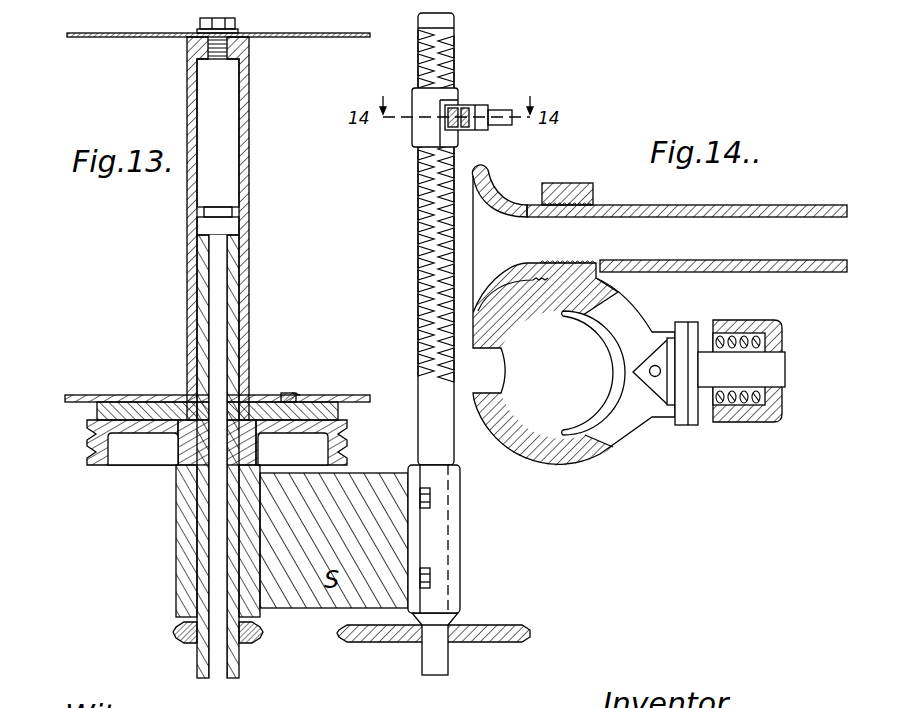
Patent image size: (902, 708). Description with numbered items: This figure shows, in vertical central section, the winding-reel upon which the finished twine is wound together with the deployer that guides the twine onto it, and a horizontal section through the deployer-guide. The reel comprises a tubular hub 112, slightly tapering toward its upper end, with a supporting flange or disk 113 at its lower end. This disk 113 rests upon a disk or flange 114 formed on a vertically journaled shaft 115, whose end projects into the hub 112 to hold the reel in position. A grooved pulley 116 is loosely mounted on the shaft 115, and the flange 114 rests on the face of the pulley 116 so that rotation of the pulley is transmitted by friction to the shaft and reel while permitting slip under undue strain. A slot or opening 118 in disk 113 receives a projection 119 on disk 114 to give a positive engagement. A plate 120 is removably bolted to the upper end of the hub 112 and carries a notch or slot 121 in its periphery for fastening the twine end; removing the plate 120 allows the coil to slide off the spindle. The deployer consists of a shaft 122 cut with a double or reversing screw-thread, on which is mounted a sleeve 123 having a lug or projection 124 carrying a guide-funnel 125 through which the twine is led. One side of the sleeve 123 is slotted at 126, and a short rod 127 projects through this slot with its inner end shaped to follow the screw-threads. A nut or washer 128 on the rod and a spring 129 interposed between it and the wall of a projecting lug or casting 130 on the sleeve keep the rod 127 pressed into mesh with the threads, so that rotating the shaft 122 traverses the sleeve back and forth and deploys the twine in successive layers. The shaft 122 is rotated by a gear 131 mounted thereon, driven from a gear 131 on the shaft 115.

In FIG. 13, the tubular hub 112 is at (249, 238).
In FIG. 13, the supporting flange or disk 113 is at (323, 394).
In FIG. 13, the disk or flange 114 is at (338, 407).
In FIG. 13, the shaft 115 is at (236, 348).
In FIG. 13, the grooved pulley 116 is at (102, 467).
In FIG. 13, the slot or opening 118 is at (287, 393).
In FIG. 13, the projection 119 is at (292, 393).
In FIG. 13, the plate 120 is at (290, 33).
In FIG. 13, the notch or slot 121 is at (225, 16).
In FIG. 13, the shaft 122 is at (428, 424).
In FIG. 13, the sleeve 123 is at (418, 135).
In FIG. 14, the sleeve 123 is at (542, 463).
In FIG. 14, the lug or projection 124 is at (572, 190).
In FIG. 14, the guide-funnel 125 is at (650, 208).
In FIG. 14, the slot 126 is at (638, 318).
In FIG. 14, the short rod 127 is at (777, 367).
In FIG. 14, the nut or washer 128 is at (690, 428).
In FIG. 14, the spring 129 is at (753, 405).
In FIG. 14, the projecting lug or casting 130 is at (777, 423).
In FIG. 13, the gear 131 is at (252, 642).